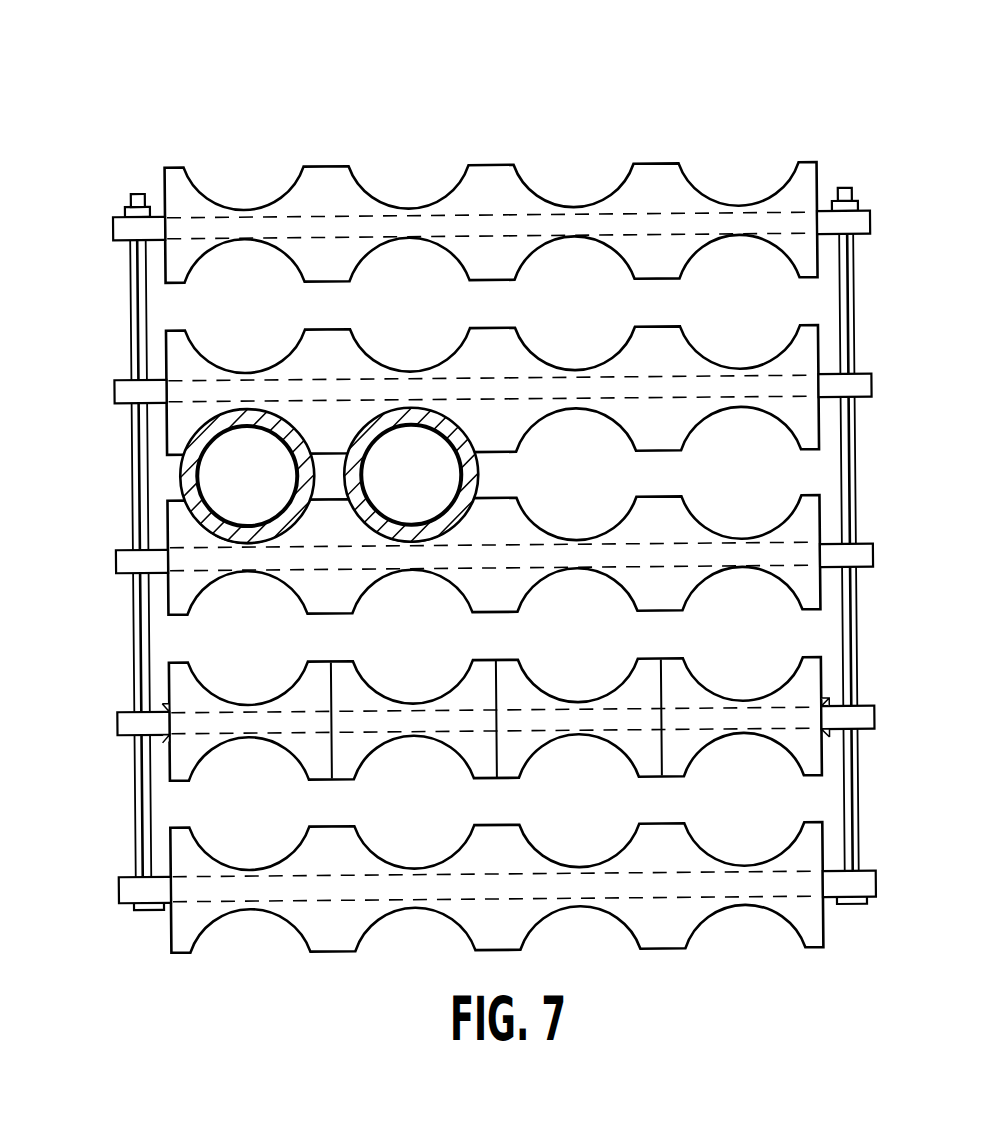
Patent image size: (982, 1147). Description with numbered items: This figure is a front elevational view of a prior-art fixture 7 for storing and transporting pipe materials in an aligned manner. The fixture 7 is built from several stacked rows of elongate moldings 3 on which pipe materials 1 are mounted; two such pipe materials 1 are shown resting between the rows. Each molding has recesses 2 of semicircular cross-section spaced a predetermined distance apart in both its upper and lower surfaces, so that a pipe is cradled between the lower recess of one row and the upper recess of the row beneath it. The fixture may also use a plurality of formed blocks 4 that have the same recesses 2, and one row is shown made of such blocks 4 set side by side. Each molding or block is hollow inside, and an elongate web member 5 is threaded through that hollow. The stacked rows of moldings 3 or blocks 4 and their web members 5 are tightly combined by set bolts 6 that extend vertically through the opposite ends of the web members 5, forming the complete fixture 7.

The fixture 7 is at (421, 104).
The pipe materials 1 is at (193, 480).
The recesses 2 is at (700, 353).
The elongate moldings 3 is at (500, 245).
The formed blocks 4 is at (355, 700).
The web member 5 is at (125, 226).
The set bolts 6 is at (136, 193).